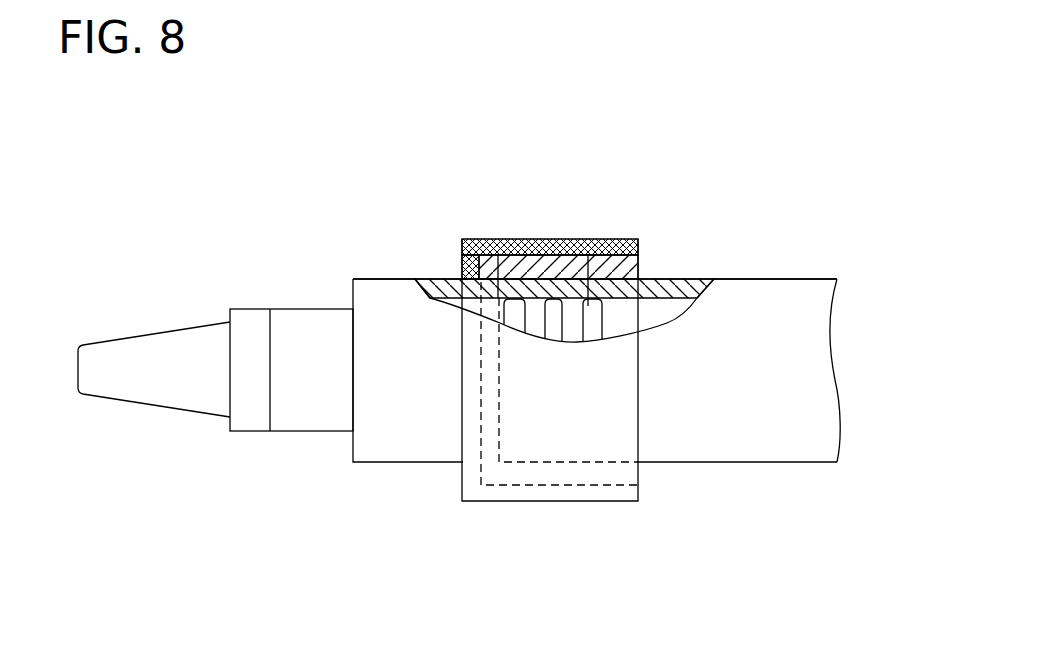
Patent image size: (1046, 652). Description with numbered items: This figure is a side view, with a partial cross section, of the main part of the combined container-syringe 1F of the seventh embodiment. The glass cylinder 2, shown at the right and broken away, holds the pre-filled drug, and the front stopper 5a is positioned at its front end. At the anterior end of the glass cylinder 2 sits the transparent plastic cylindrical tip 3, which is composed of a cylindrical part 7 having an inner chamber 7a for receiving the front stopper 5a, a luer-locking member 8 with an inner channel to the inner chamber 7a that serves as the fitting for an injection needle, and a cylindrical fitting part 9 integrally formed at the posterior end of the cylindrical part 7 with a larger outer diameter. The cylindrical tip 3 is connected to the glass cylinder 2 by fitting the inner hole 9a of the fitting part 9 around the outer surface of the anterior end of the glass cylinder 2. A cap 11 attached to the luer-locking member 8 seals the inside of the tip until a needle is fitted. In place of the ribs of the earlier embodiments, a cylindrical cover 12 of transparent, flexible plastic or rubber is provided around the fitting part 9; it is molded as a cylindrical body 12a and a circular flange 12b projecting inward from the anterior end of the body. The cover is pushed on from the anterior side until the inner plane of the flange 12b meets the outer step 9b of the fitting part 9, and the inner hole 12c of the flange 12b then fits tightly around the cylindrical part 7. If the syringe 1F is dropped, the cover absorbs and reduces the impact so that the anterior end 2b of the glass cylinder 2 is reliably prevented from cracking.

The combined container-syringe 1F is at (459, 342).
The glass cylinder 2 is at (765, 279).
The anterior end of the glass cylinder 2b is at (506, 283).
The cylindrical tip 3 is at (270, 395).
The front stopper 5a is at (612, 262).
The cylindrical part 7 is at (392, 279).
The inner chamber 7a is at (450, 305).
The luer-locking member 8 is at (312, 309).
The cylindrical fitting part 9 is at (564, 211).
The inner hole of the fitting part 9a is at (663, 297).
The outer step of the fitting part 9b is at (480, 293).
The cap 11 is at (185, 322).
The cylindrical cover 12 is at (506, 306).
The cylindrical body 12a is at (570, 239).
The circular flange 12b is at (462, 256).
The inner hole of the circular flange 12c is at (437, 284).